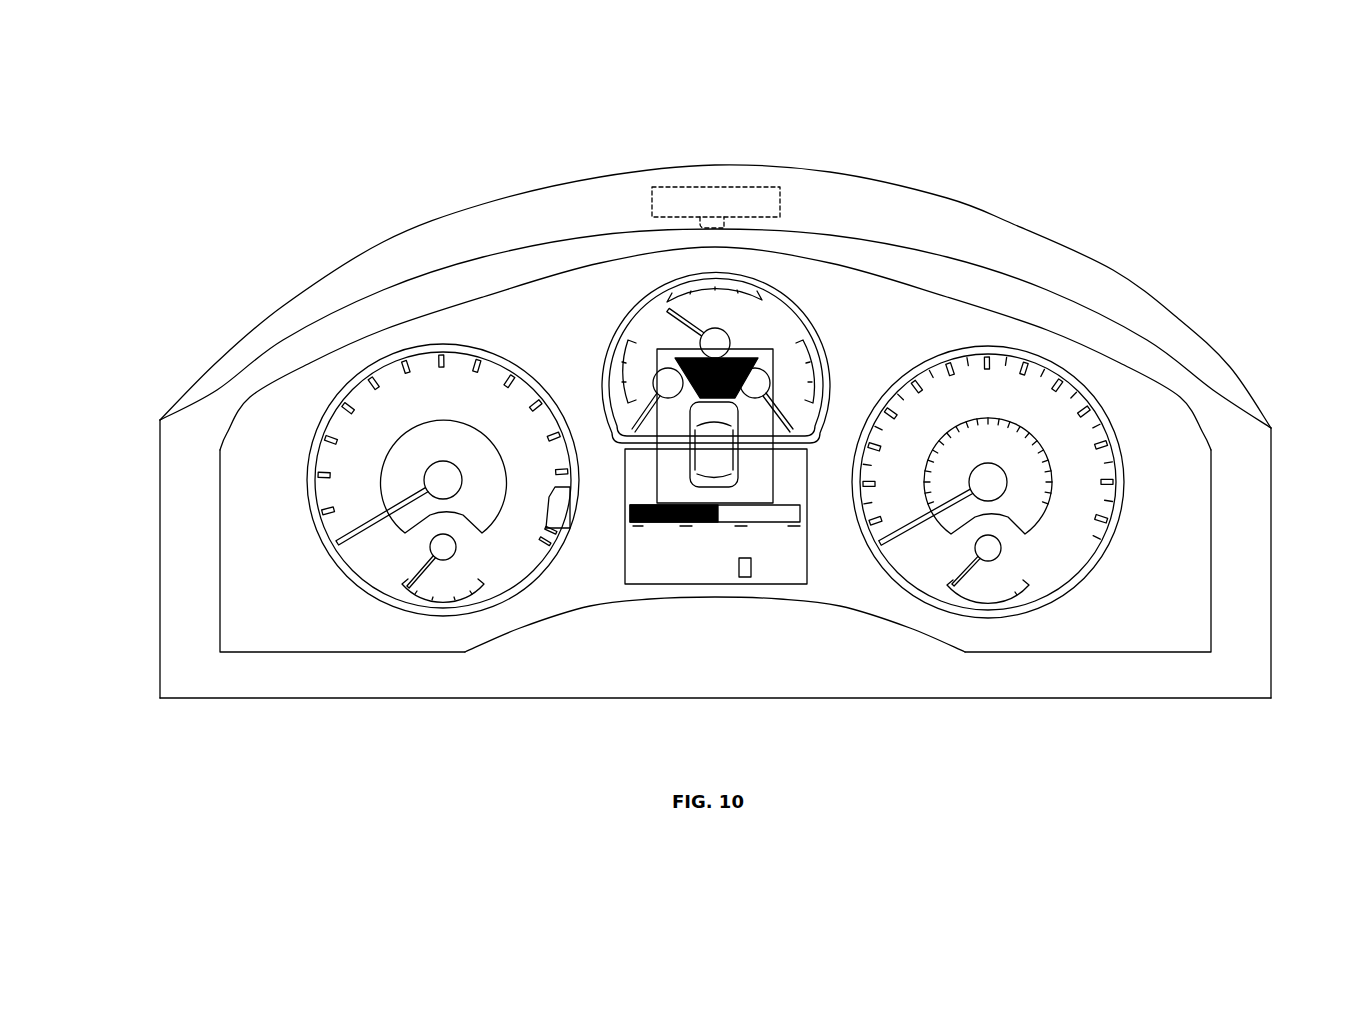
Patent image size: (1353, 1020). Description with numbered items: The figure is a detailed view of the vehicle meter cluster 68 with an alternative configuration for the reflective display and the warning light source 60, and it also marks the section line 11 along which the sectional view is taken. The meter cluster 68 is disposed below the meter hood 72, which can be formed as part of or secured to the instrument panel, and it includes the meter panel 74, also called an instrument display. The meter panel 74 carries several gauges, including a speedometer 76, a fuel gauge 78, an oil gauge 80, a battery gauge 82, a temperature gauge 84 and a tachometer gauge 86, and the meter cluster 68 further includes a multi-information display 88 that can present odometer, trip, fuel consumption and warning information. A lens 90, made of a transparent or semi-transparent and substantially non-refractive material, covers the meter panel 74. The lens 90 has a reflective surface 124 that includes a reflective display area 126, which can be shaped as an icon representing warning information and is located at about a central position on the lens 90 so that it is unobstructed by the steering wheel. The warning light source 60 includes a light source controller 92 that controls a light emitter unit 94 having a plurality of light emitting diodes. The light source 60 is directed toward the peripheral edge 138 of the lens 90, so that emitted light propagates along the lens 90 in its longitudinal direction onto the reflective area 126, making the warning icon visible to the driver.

The section line 11 is at (590, 143).
The warning light source 60 is at (775, 189).
The meter cluster 68 is at (267, 203).
The meter hood 72 is at (1086, 292).
The meter panel 74 is at (1173, 460).
The speedometer 76 is at (350, 458).
The fuel gauge 78 is at (433, 587).
The oil gauge 80 is at (633, 390).
The battery gauge 82 is at (702, 297).
The temperature gauge 84 is at (803, 353).
The tachometer gauge 86 is at (1053, 563).
The multi-information display 88 is at (720, 580).
The lens 90 is at (1242, 612).
The light source controller 92 is at (720, 203).
The light emitter unit 94 is at (724, 228).
The reflective surface 124 is at (670, 460).
The reflective display area 126 is at (773, 455).
The peripheral edge 138 is at (1037, 700).